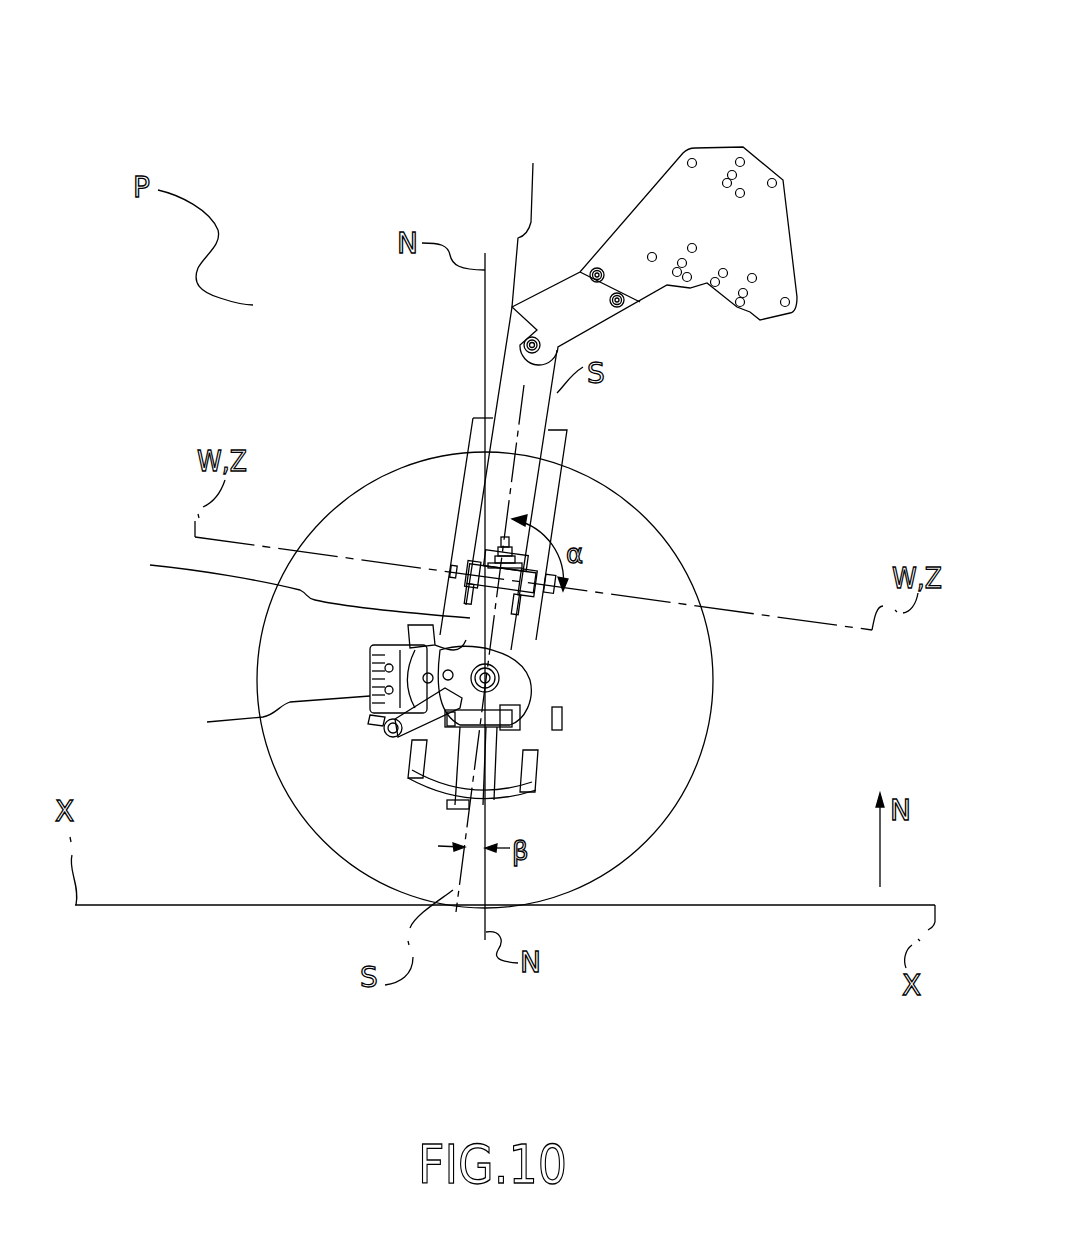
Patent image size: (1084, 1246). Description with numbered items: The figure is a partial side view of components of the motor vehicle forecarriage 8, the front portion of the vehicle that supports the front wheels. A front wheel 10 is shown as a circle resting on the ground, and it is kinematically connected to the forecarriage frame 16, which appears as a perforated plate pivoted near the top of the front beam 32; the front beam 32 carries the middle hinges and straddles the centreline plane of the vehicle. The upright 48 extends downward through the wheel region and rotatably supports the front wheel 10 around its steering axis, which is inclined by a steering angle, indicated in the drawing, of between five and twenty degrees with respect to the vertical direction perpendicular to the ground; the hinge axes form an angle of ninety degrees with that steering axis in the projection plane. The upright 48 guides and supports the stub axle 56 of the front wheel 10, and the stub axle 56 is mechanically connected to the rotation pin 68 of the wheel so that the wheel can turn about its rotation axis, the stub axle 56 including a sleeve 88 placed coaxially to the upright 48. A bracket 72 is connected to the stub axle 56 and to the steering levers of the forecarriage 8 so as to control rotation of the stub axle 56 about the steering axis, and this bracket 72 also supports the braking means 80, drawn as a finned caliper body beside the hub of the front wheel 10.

The forecarriage 8 is at (654, 222).
The front wheel 10 is at (548, 557).
The forecarriage frame 16 is at (657, 318).
The front beam 32 is at (503, 388).
The upright 48 is at (300, 590).
The stub axle 56 is at (647, 682).
The rotation pin 68 is at (500, 678).
The bracket 72 is at (518, 703).
The braking means 80 is at (370, 696).
The sleeve 88 is at (398, 735).